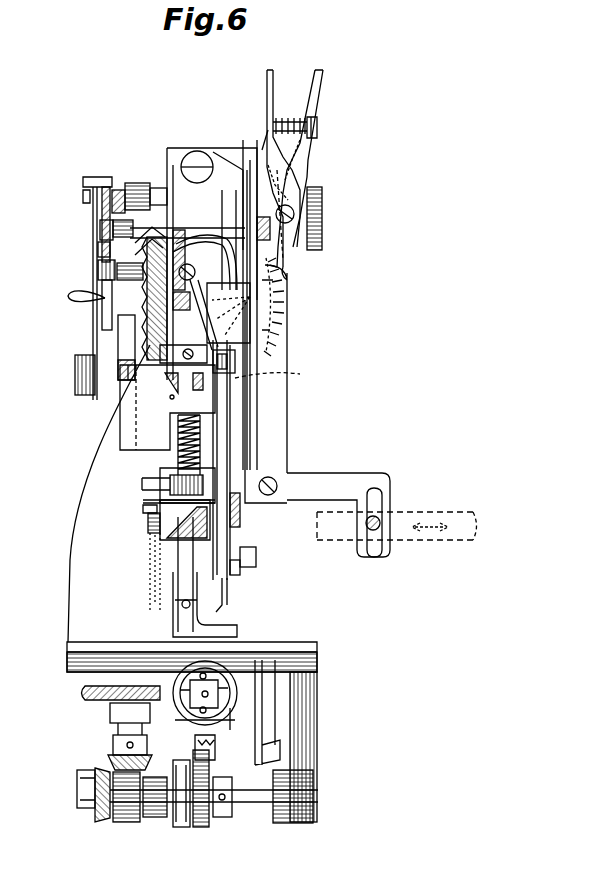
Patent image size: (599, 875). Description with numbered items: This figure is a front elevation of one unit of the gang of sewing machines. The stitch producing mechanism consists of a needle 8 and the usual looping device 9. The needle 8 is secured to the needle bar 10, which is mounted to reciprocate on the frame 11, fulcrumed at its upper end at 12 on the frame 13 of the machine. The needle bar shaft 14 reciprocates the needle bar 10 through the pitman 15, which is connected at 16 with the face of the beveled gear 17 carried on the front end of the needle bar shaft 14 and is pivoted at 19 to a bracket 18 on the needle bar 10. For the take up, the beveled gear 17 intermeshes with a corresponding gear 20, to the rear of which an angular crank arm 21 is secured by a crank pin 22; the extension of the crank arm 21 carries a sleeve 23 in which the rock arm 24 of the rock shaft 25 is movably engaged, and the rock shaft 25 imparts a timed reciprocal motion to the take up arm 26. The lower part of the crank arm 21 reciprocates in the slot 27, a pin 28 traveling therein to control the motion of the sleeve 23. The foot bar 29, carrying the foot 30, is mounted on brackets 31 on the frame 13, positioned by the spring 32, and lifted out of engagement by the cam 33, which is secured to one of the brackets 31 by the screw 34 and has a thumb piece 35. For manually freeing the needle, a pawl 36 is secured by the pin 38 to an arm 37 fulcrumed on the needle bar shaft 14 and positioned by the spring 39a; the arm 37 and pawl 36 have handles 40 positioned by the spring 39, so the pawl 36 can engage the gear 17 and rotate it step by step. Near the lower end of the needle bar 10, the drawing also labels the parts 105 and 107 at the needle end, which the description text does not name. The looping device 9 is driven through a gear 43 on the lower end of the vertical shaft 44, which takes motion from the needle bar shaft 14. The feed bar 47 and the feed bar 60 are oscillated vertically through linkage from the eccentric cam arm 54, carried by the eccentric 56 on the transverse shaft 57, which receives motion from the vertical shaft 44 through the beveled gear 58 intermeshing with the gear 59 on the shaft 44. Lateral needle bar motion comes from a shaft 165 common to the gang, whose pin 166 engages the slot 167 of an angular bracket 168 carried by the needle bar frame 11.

The needle 8 is at (228, 596).
The looping device 9 is at (222, 698).
The needle bar 10 is at (218, 430).
The frame 11 is at (257, 385).
The fulcrum 12 is at (198, 162).
The frame of the sewing machine 13 is at (175, 148).
The needle bar shaft 14 is at (207, 290).
The pitman 15 is at (200, 323).
The connection 16 is at (150, 282).
The beveled gear 17 is at (275, 300).
The bracket 18 is at (236, 366).
The pivot 19 is at (300, 374).
The gear 20 is at (167, 407).
The angular crank arm 21 is at (125, 316).
The crank pin 22 is at (143, 245).
The sleeve 23 is at (98, 268).
The rock arm 24 is at (68, 296).
The rock shaft 25 is at (137, 210).
The take up arm 26 is at (240, 277).
The slot 27 is at (128, 362).
The pin 28 is at (128, 365).
The foot bar 29 is at (186, 560).
The foot 30 is at (230, 630).
The brackets 31 is at (183, 400).
The spring 32 is at (178, 457).
The cam 33 is at (152, 530).
The screw 34 is at (147, 518).
The thumb piece 35 is at (152, 600).
The pawl 36 is at (285, 258).
The arm 37 is at (283, 180).
The pin 38 is at (302, 212).
The spring 39 is at (292, 120).
The spring 39a is at (264, 160).
The handles 40 is at (266, 92).
The gear 43 is at (82, 693).
The vertical shaft 44 is at (118, 729).
The feed bar 47 is at (268, 742).
The eccentric cam arm 54 is at (212, 755).
The eccentric 56 is at (225, 805).
The transverse shaft 57 is at (258, 802).
The beveled gear 58 is at (108, 812).
The gear 59 is at (108, 757).
The feed bar 60 is at (237, 714).
The needle clamp 105 is at (235, 580).
The needle clamp screw 107 is at (255, 570).
The shaft 165 is at (476, 542).
The pin 166 is at (370, 553).
The slot 167 is at (376, 498).
The angular bracket 168 is at (345, 480).